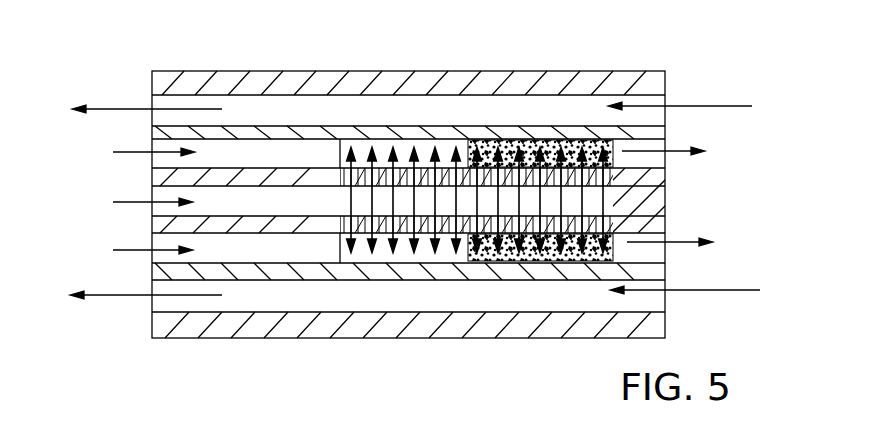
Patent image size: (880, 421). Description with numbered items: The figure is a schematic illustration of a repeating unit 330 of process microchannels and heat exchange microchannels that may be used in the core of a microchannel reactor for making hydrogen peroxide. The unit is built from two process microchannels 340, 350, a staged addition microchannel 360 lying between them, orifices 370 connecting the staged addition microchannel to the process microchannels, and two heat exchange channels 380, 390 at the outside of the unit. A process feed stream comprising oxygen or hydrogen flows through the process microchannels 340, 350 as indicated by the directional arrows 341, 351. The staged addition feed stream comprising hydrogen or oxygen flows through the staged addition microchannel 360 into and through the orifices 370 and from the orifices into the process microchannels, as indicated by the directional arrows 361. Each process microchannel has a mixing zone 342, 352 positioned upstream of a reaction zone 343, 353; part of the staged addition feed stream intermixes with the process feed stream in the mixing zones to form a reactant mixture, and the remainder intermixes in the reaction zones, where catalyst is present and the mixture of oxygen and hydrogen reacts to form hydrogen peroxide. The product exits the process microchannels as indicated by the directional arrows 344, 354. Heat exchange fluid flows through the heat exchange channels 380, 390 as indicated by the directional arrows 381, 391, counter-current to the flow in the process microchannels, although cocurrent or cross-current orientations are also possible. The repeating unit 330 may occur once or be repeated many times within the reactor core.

The repeating unit 330 is at (215, 56).
The process microchannel 340 is at (275, 253).
The directional arrow 341 is at (133, 250).
The mixing zone 342 is at (398, 255).
The reaction zone 343 is at (602, 262).
The directional arrow 344 is at (683, 242).
The process microchannel 350 is at (276, 152).
The directional arrow 351 is at (130, 152).
The mixing zone 352 is at (382, 150).
The reaction zone 353 is at (591, 145).
The directional arrow 354 is at (677, 151).
The staged addition microchannel 360 is at (322, 200).
The directional arrows 361 is at (133, 202).
The orifices 370 is at (427, 150).
The heat exchange channel 380 is at (437, 298).
The directional arrow 381 is at (110, 295).
The heat exchange channel 390 is at (538, 112).
The directional arrow 391 is at (115, 108).